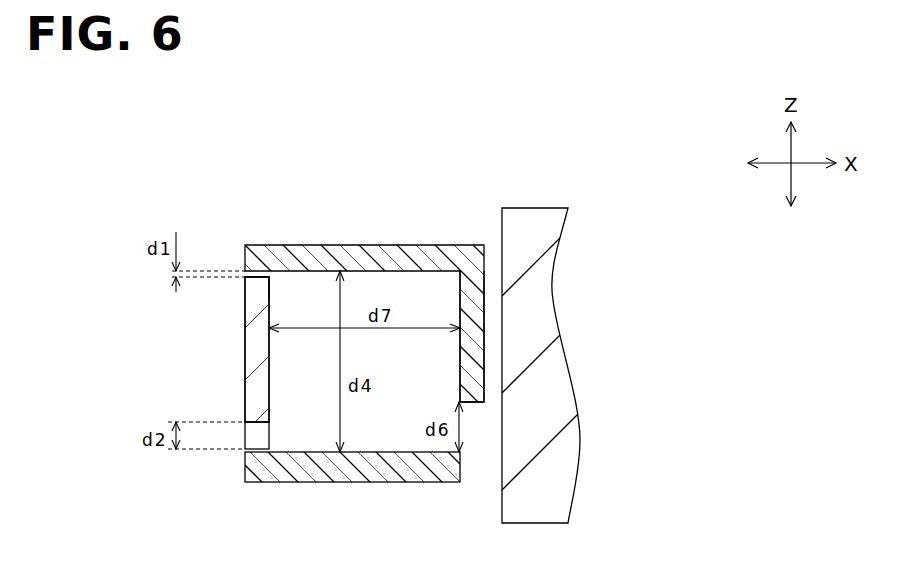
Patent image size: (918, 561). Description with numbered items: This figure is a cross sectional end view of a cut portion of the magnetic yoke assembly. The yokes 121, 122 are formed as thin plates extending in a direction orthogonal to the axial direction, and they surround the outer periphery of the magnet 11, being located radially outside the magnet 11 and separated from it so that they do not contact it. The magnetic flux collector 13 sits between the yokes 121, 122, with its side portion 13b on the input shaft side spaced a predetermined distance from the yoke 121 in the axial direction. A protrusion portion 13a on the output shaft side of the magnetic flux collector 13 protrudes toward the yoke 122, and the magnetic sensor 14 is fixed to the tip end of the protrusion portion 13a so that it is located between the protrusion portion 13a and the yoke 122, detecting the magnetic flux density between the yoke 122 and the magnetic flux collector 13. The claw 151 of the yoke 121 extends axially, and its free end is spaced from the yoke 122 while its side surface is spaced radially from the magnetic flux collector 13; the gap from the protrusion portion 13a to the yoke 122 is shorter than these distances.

The magnet 11 is at (526, 222).
The magnetic flux collector 13 is at (250, 305).
The protrusion portion 13a is at (248, 356).
The side portion 13b is at (259, 274).
The magnetic sensor 14 is at (246, 438).
The yoke 121 is at (320, 250).
The yoke 122 is at (330, 484).
The claw 151 is at (480, 287).